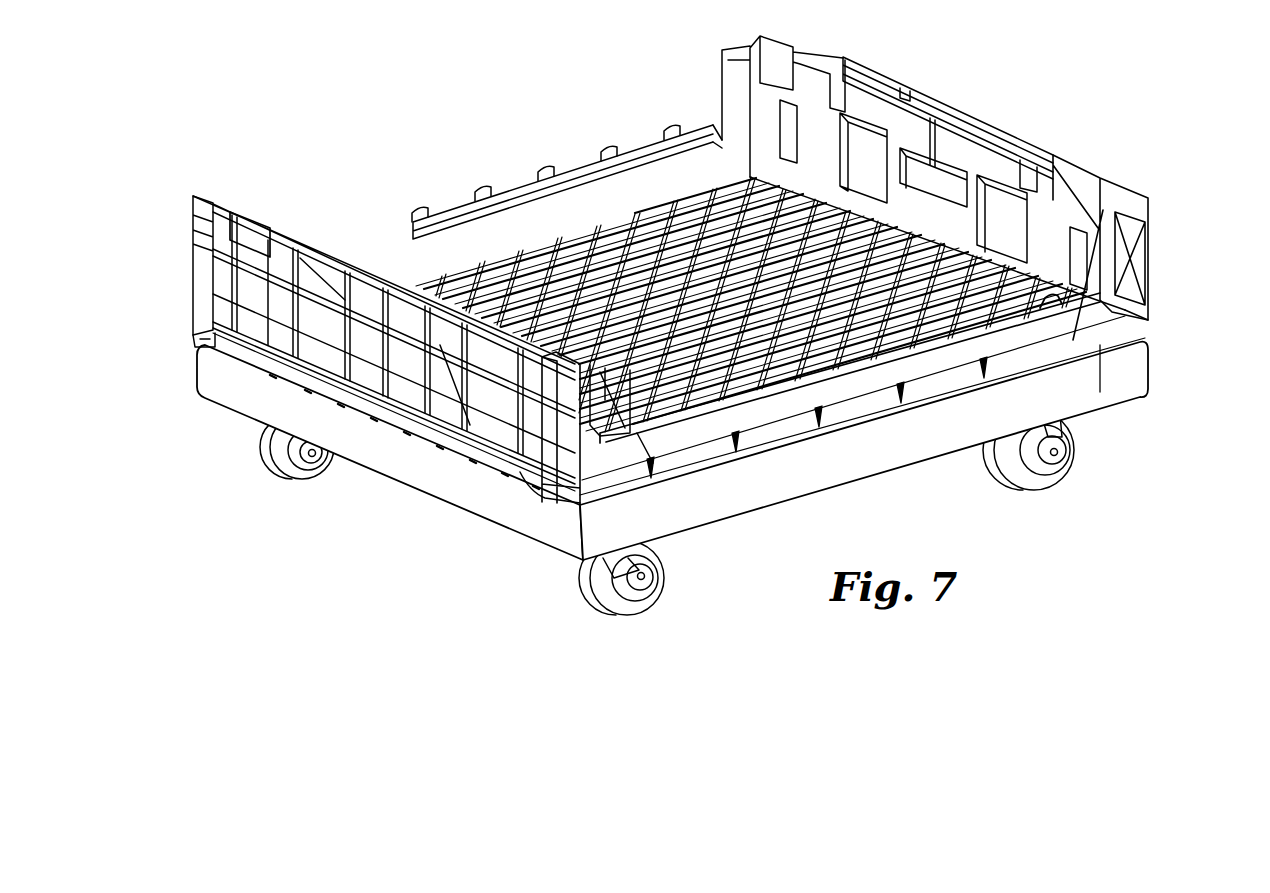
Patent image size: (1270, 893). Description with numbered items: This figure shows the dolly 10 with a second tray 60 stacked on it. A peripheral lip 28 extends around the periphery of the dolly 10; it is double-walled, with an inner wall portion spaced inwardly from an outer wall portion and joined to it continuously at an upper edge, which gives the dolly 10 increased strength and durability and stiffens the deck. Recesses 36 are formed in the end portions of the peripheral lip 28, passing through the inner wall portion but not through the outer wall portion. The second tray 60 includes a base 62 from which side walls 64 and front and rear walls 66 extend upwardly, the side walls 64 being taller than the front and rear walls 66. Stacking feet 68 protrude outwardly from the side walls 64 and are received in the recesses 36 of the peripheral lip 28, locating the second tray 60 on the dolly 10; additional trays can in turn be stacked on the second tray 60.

The dolly 10 is at (1180, 358).
The peripheral lip 28 is at (363, 437).
The recesses 36 is at (195, 350).
The second tray 60 is at (1150, 231).
The base 62 is at (567, 263).
The side walls 64 is at (292, 222).
The front and rear walls 66 is at (397, 217).
The stacking feet 68 is at (243, 345).